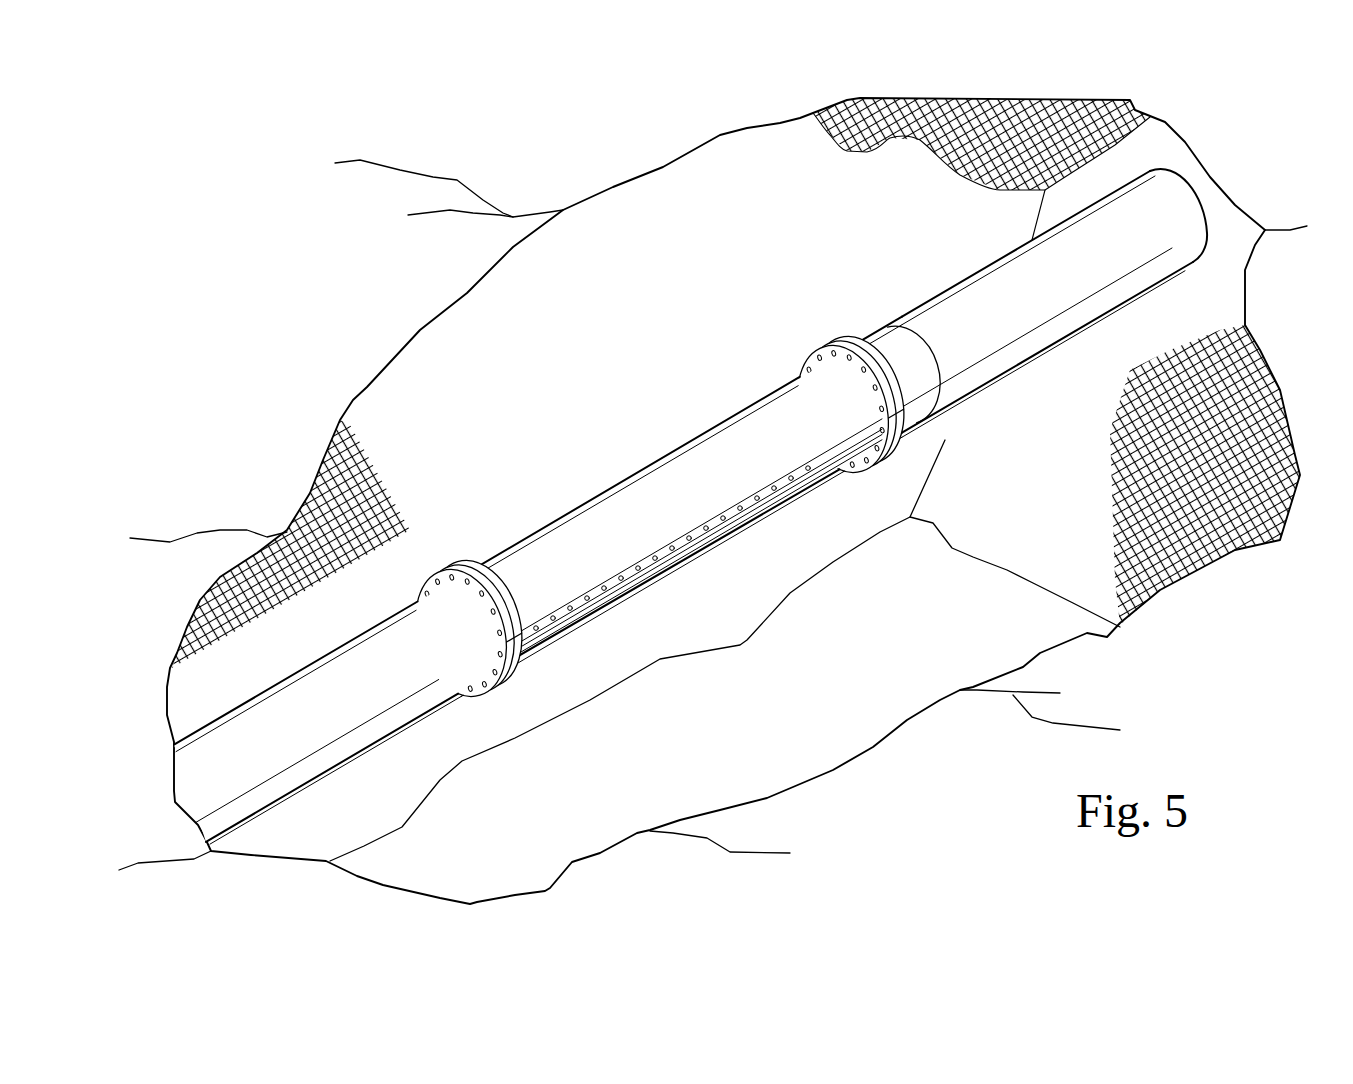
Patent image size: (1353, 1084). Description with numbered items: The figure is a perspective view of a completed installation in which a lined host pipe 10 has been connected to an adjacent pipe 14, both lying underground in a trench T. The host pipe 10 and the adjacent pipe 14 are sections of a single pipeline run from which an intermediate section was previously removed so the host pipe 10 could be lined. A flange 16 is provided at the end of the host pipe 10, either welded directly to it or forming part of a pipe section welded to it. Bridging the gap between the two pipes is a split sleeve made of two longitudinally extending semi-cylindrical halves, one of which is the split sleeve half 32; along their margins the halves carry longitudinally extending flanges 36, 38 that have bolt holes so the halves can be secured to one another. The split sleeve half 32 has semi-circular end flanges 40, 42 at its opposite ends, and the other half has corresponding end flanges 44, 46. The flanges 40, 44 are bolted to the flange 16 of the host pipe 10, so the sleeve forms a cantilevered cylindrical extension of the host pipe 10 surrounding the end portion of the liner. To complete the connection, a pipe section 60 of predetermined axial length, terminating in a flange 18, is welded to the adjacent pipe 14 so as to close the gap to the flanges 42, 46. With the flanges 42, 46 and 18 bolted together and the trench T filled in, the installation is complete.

The underground trench T is at (815, 118).
The host pipe 10 is at (659, 506).
The adjacent pipe 14 is at (975, 295).
The flange 16 is at (424, 576).
The flange 18 is at (858, 346).
The split sleeve half 32 is at (661, 467).
The longitudinally extending flange 36 is at (650, 577).
The longitudinally extending flange 38 is at (688, 549).
The end flange 40 is at (470, 566).
The end flange 42 is at (800, 357).
The end flange 44 is at (526, 668).
The end flange 46 is at (870, 458).
The pipe section 60 is at (924, 371).